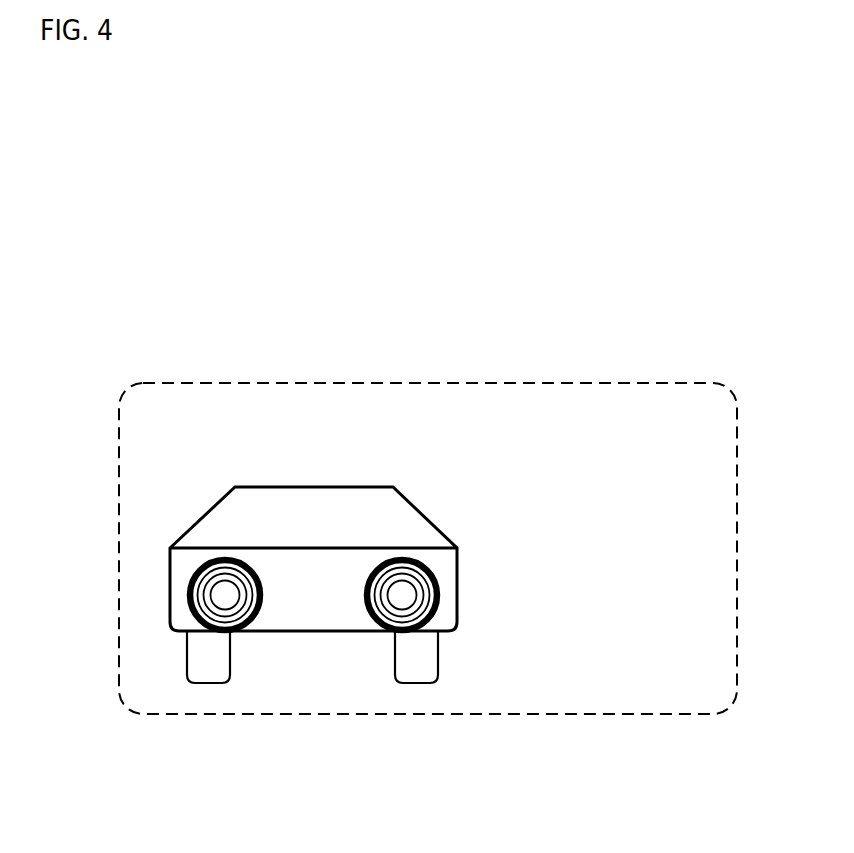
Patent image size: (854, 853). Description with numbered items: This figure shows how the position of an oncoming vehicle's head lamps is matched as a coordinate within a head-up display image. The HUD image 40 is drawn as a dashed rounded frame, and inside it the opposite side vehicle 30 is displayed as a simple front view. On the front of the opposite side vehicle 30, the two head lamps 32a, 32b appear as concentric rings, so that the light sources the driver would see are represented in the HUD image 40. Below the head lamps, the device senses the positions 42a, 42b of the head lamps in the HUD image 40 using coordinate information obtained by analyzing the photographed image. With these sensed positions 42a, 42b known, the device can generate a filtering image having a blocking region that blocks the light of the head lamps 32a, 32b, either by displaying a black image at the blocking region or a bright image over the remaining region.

The opposite side vehicle 30 is at (212, 509).
The head lamp 32a is at (219, 596).
The head lamp 32b is at (408, 595).
The HUD image 40 is at (502, 383).
The position of the head lamp 42a is at (255, 632).
The position of the head lamp 42b is at (417, 632).